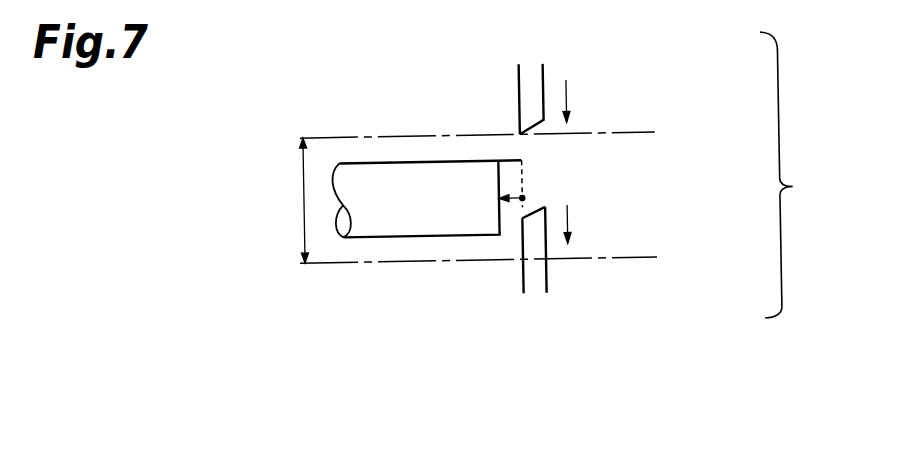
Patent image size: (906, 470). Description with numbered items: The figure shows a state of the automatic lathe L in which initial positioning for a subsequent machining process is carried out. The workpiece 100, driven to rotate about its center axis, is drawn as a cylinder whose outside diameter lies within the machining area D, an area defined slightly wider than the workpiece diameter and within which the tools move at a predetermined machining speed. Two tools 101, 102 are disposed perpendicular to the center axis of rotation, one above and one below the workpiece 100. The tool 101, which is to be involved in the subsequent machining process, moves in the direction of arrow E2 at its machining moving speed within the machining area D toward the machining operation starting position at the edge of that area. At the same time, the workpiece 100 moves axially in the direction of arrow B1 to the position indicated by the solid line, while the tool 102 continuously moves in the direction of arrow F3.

The workpiece 100 is at (416, 226).
The tool 101 is at (526, 93).
The tool 102 is at (537, 278).
The machining area D is at (303, 199).
The automatic lathe L is at (791, 174).
The arrow E2 is at (568, 102).
The arrow F3 is at (567, 224).
The arrow B1 is at (522, 199).